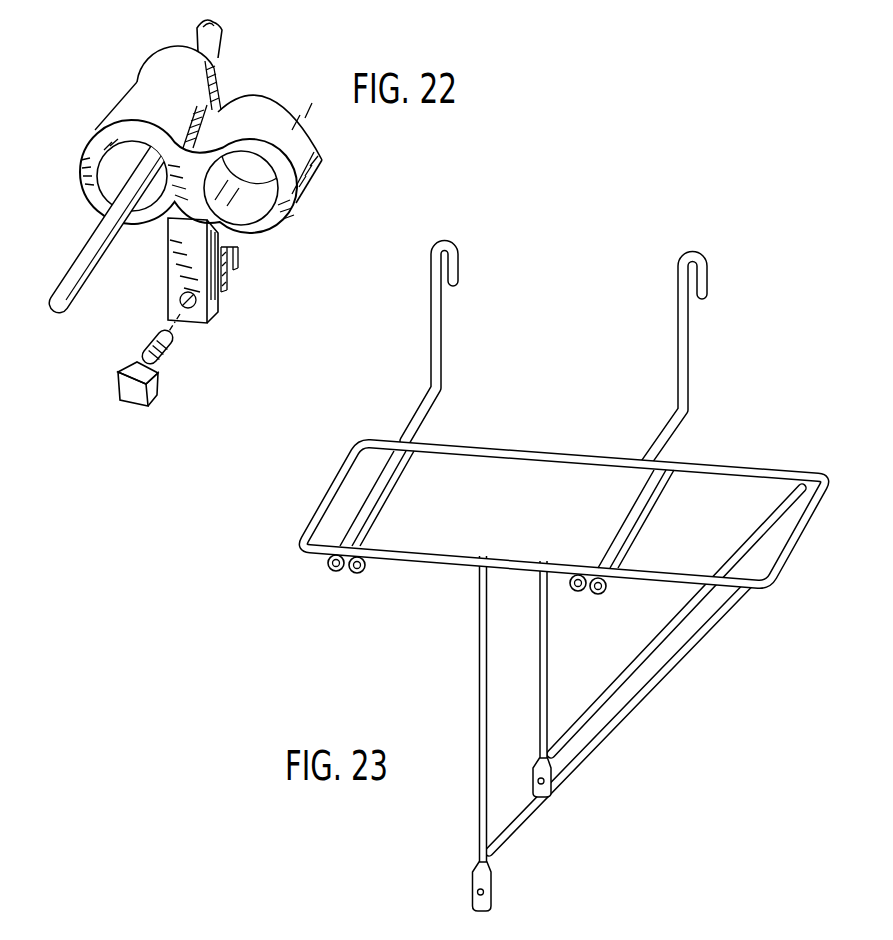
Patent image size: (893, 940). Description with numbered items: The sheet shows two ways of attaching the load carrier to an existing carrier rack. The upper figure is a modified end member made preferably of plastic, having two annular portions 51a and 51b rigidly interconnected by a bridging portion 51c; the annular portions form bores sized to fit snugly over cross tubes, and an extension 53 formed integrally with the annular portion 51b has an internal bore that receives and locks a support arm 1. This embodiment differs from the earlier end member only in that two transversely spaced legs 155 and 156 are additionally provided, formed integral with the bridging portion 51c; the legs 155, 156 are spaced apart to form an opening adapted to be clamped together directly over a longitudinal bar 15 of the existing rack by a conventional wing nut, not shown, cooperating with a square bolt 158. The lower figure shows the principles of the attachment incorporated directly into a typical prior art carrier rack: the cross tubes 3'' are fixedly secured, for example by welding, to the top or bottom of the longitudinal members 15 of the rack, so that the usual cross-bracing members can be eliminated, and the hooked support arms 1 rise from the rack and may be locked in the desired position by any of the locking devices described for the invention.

In FIG. 22, the support arm 1 is at (224, 33).
In FIG. 23, the support arm 1 is at (436, 346).
In FIG. 23, the longitudinal bar 15 is at (510, 452).
In FIG. 23, the cross tube 3'' is at (493, 509).
In FIG. 22, the extension 53 is at (166, 62).
In FIG. 22, the annular portion 51a is at (313, 158).
In FIG. 22, the annular portion 51b is at (83, 150).
In FIG. 22, the bridging portion 51c is at (224, 108).
In FIG. 22, the leg 155 is at (214, 307).
In FIG. 22, the leg 156 is at (238, 253).
In FIG. 22, the square bolt 158 is at (167, 352).